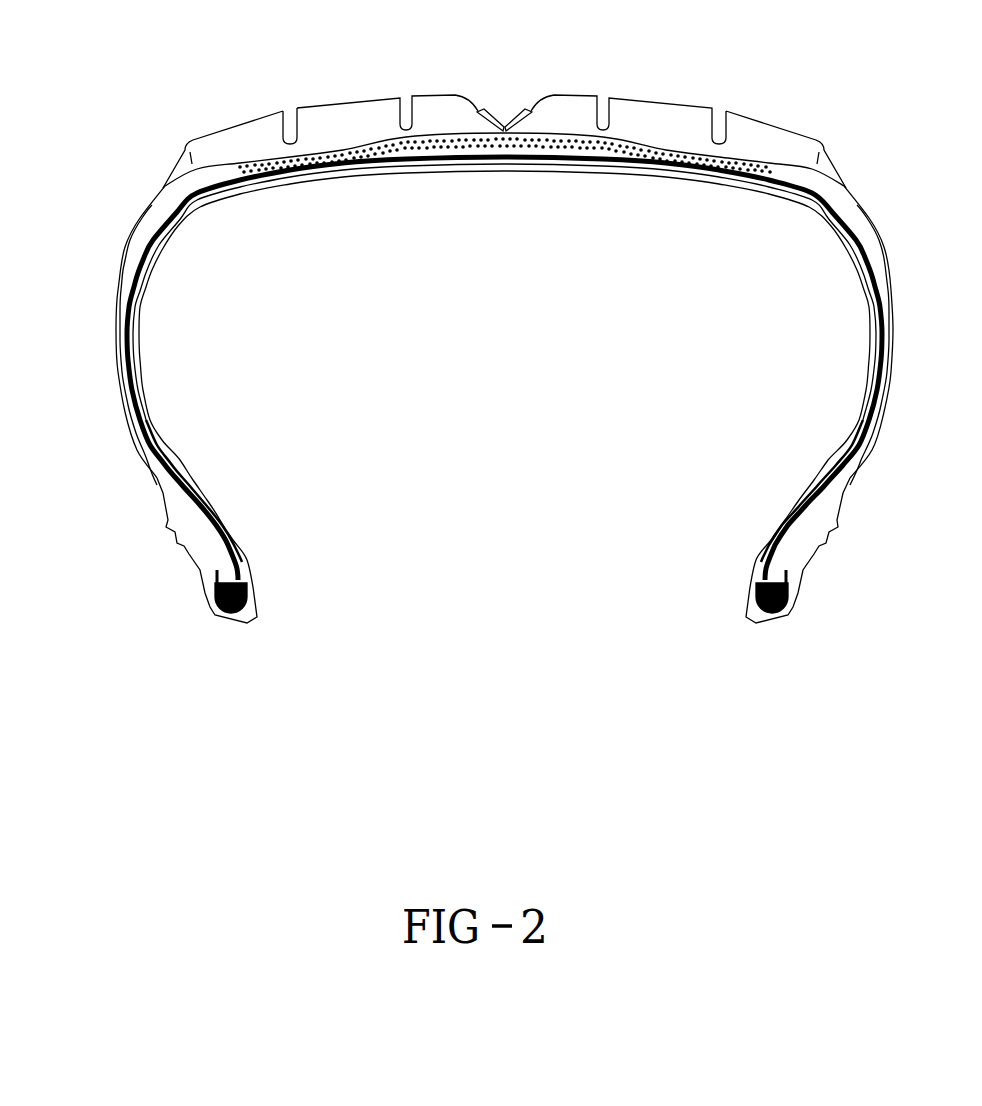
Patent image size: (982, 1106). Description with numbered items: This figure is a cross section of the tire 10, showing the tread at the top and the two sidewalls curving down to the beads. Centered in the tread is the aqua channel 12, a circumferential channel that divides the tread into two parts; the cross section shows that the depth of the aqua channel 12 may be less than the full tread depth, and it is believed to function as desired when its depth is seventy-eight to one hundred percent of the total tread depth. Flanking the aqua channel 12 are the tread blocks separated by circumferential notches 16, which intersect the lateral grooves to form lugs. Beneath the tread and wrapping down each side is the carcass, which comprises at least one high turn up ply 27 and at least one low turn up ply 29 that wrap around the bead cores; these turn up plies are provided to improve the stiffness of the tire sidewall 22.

The tire 10 is at (390, 676).
The aqua channel 12 is at (505, 128).
The circumferential notches 16 is at (288, 110).
The tire sidewall 22 is at (114, 334).
The high turn up ply 27 is at (155, 489).
The low turn up ply 29 is at (219, 572).